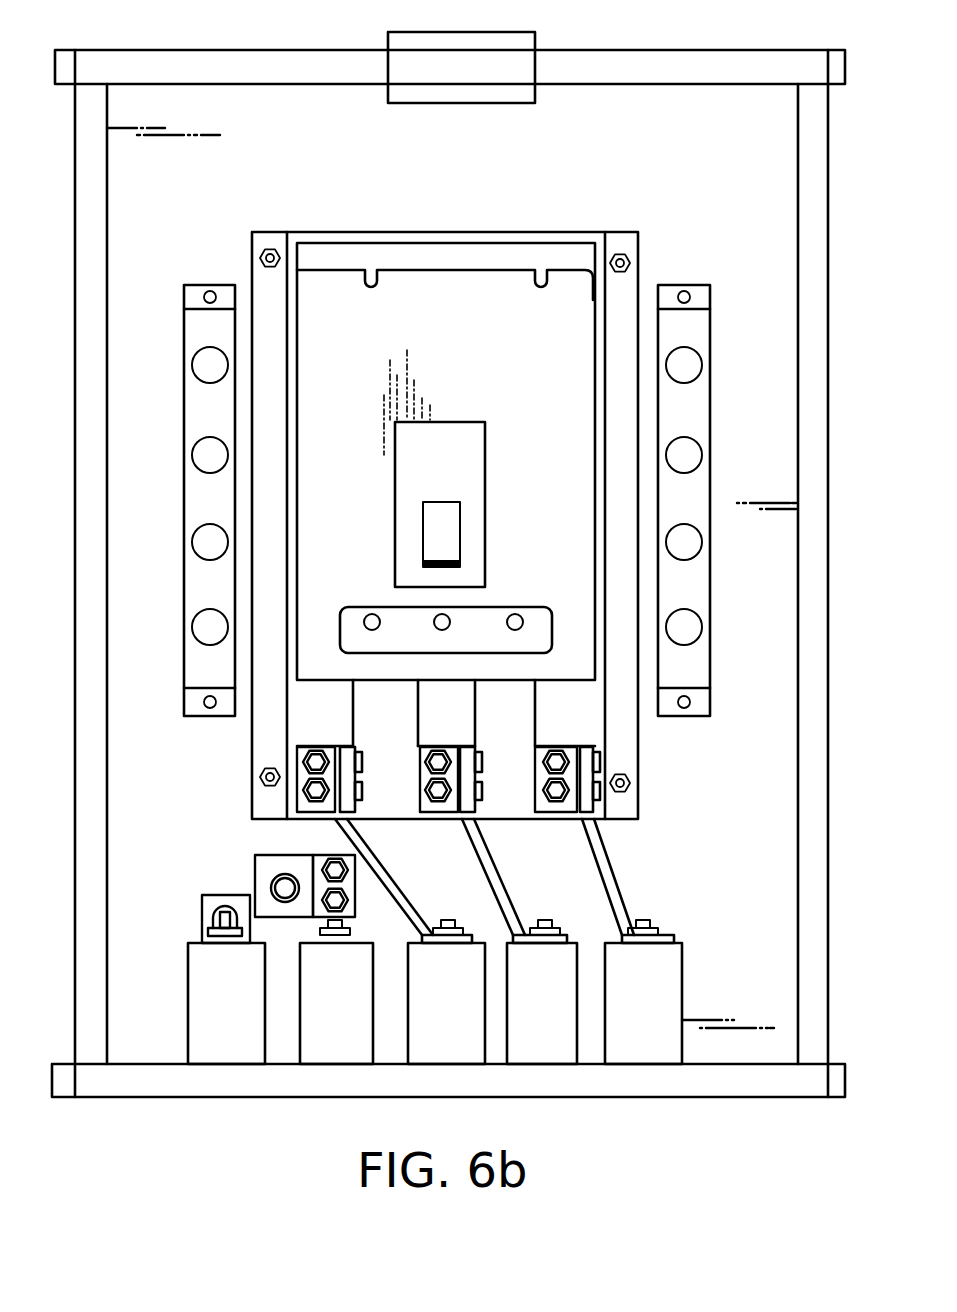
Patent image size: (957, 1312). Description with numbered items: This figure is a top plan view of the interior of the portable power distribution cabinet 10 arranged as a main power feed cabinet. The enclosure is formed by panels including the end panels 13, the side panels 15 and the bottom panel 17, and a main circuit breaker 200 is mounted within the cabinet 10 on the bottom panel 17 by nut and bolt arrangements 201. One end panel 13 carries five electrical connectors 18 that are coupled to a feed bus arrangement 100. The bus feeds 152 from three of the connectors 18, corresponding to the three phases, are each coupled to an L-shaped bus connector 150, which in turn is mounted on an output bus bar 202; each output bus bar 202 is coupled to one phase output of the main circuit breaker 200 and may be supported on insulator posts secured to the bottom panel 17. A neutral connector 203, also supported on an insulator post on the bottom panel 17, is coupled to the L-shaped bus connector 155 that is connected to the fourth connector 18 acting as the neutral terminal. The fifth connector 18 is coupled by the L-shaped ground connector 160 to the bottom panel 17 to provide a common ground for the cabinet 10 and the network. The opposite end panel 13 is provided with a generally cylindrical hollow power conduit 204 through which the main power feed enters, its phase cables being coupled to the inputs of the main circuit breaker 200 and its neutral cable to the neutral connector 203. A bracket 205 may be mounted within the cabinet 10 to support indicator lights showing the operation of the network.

The portable power distribution cabinet 10 is at (180, 1125).
The end panel 13 is at (606, 62).
The side panel 15 is at (75, 340).
The bottom panel 17 is at (728, 172).
The electrical connector 18 is at (188, 997).
The feed bus arrangement 100 is at (636, 872).
The L-shaped bus connector 150 is at (421, 778).
The bus feed 152 is at (383, 858).
The L-shaped bus connector 155 is at (352, 916).
The L-shaped ground connector 160 is at (202, 912).
The main circuit breaker 200 is at (447, 290).
The nut and bolt arrangement 201 is at (261, 258).
The output bus bar 202 is at (354, 706).
The neutral connector 203 is at (256, 878).
The power conduit 204 is at (392, 44).
The bracket 205 is at (184, 405).